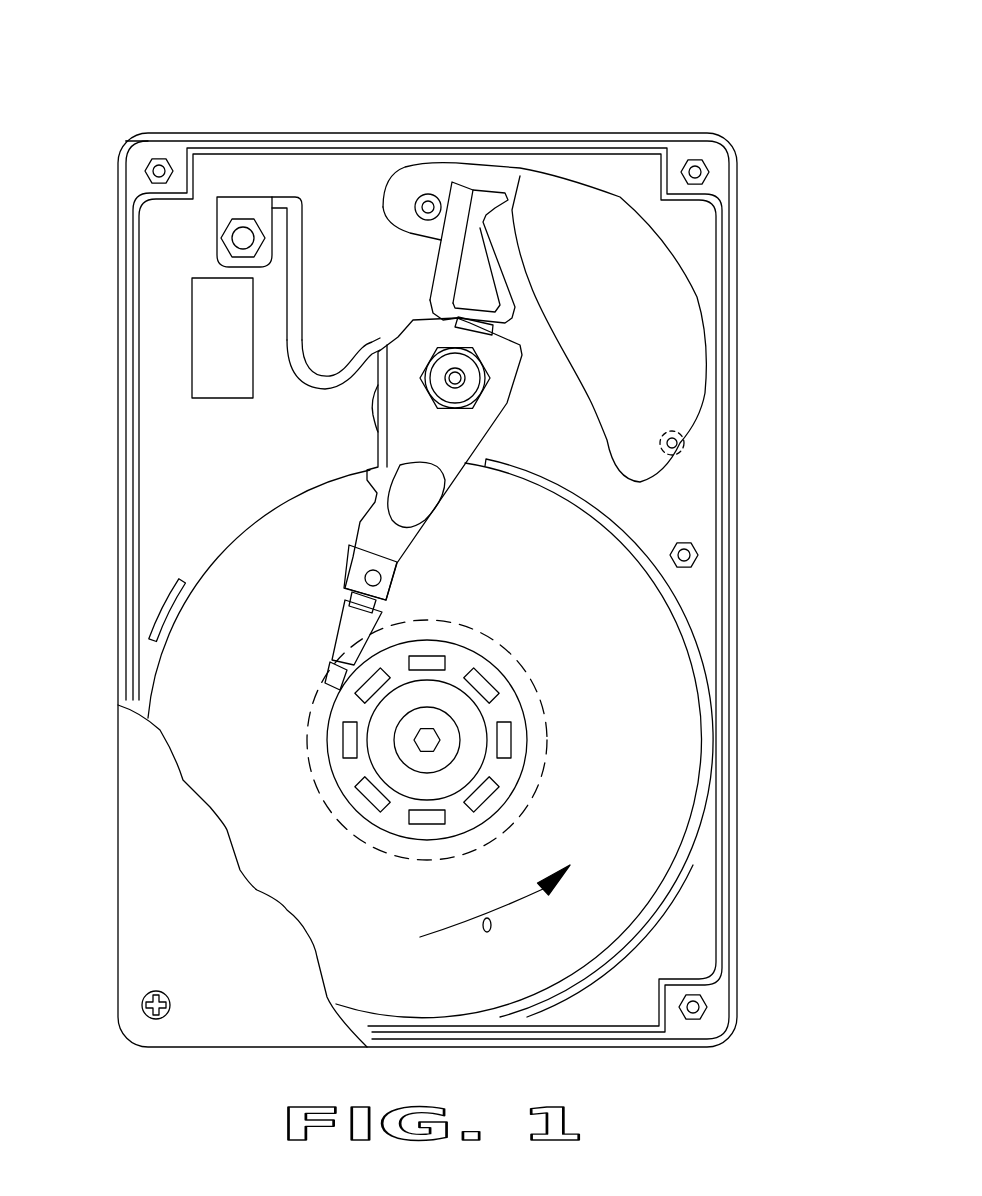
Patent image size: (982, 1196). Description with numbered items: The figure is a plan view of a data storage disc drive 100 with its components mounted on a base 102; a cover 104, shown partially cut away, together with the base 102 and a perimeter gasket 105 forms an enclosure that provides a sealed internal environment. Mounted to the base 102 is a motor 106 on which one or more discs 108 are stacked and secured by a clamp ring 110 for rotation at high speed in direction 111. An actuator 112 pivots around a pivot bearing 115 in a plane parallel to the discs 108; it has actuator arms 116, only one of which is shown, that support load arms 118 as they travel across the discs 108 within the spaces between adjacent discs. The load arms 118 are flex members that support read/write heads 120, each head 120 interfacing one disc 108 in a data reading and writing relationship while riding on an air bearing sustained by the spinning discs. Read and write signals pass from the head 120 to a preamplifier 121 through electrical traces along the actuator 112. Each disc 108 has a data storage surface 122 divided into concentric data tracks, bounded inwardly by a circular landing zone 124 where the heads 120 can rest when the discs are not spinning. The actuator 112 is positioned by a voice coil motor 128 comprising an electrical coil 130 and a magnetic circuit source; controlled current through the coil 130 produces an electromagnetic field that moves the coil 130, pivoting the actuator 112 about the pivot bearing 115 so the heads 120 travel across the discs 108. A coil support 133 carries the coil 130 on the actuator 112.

The data storage disc drive 100 is at (179, 85).
The base 102 is at (182, 470).
The cover 104 is at (153, 887).
The perimeter gasket 105 is at (662, 135).
The motor 106 is at (452, 777).
The disc 108 is at (703, 680).
The clamp ring 110 is at (497, 712).
The direction of rotation 111 is at (487, 932).
The actuator 112 is at (413, 449).
The pivot bearing 115 is at (461, 388).
The actuator arm 116 is at (367, 538).
The load arm 118 is at (340, 622).
The read/write head 120 is at (327, 672).
The preamplifier 121 is at (377, 407).
The data storage surface 122 is at (647, 815).
The landing zone 124 is at (312, 784).
The voice coil motor 128 is at (398, 178).
The electrical coil 130 is at (452, 280).
The coil support 133 is at (422, 287).